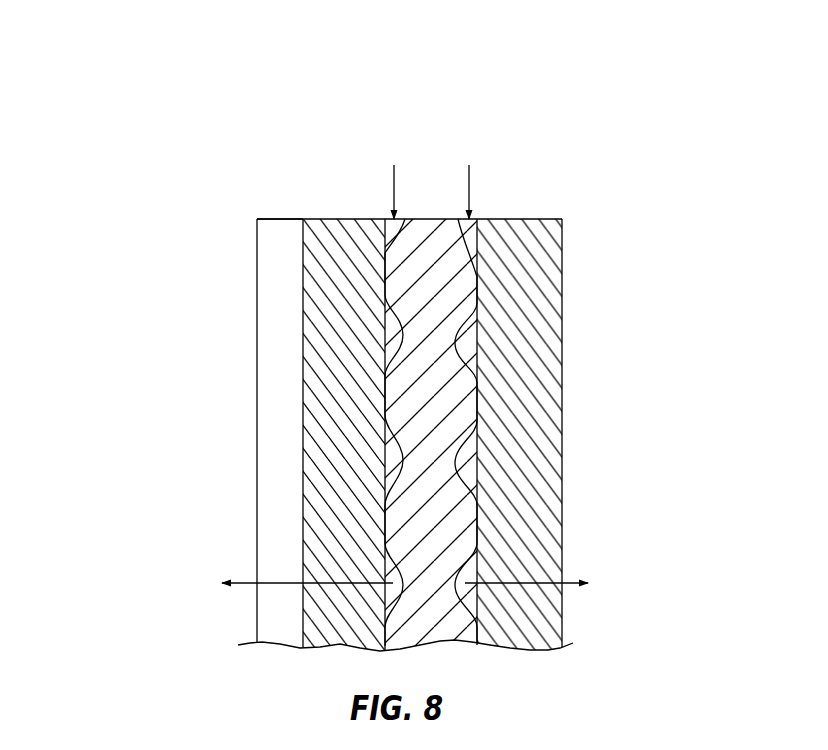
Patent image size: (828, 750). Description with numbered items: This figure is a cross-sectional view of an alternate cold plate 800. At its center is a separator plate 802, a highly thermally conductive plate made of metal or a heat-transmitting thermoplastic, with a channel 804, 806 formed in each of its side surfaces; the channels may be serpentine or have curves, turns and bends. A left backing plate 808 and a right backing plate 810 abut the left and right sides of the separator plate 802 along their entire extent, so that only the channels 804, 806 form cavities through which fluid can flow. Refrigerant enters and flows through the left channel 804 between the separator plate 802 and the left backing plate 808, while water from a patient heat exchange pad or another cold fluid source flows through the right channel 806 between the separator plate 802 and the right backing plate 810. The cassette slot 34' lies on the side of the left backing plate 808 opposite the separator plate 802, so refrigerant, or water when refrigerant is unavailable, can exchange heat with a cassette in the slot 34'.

The cold plate 800 is at (373, 334).
The separator plate 802 is at (432, 219).
The left channel 804 is at (396, 343).
The right channel 806 is at (468, 340).
The left backing plate 808 is at (337, 218).
The right backing plate 810 is at (530, 218).
The cassette slot 34' is at (239, 435).